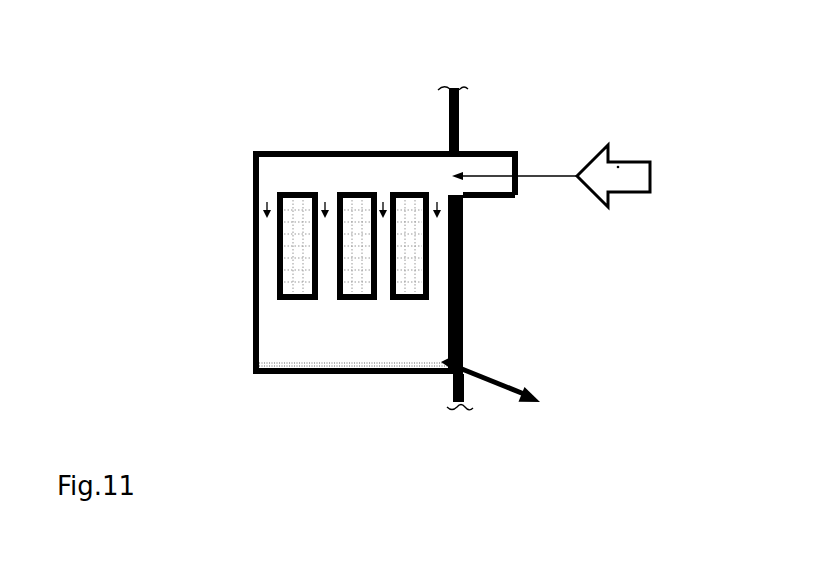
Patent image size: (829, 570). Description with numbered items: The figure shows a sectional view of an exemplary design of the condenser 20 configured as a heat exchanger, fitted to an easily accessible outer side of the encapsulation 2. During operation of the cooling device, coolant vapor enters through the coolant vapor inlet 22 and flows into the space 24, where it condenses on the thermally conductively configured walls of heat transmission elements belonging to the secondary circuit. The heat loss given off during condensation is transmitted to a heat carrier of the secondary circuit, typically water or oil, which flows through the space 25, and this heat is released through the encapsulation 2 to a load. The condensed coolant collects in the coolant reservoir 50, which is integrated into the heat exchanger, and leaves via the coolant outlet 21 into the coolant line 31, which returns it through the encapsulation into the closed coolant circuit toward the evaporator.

The condenser 20 is at (590, 97).
The coolant vapor inlet 22 is at (482, 165).
The space 24 is at (385, 275).
The space 25 is at (410, 213).
The coolant reservoir 50 is at (413, 358).
The encapsulation 2 is at (450, 397).
The coolant outlet 21 is at (470, 365).
The coolant line 31 is at (523, 382).